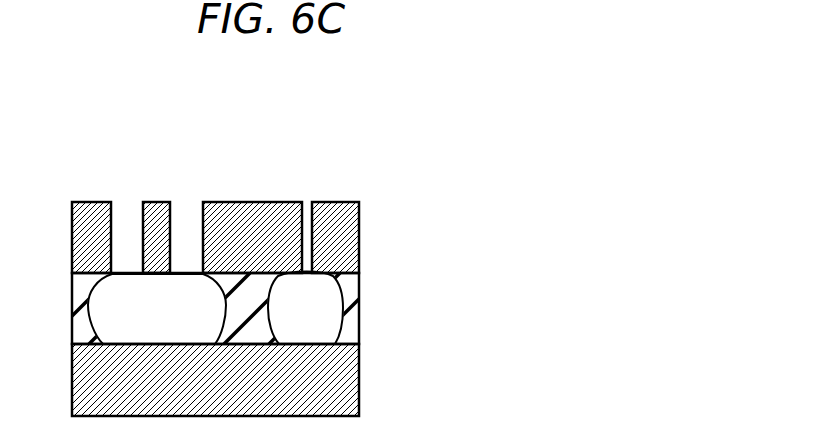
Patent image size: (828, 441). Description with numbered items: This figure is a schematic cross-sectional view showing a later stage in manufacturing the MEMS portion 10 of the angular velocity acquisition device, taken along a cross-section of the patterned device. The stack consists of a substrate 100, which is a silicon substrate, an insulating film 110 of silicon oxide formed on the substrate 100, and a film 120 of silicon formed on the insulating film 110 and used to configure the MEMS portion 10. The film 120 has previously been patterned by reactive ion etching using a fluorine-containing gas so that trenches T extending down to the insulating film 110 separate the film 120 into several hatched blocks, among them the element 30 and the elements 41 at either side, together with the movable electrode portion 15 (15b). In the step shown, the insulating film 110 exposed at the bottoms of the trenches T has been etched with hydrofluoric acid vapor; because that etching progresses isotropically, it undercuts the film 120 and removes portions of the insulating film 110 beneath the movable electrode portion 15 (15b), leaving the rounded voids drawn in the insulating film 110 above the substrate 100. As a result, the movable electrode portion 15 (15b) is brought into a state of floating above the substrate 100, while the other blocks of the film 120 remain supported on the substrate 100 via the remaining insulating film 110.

The MEMS portion 10 is at (417, 167).
The movable electrode portion 15 is at (148, 212).
The movable electrode portion 15b is at (156, 237).
The gate electrode 30 is at (243, 212).
The electrode 41 is at (77, 210).
The substrate 100 is at (353, 391).
The insulating film 110 is at (353, 321).
The film 120 is at (363, 202).
The trenches T is at (307, 257).